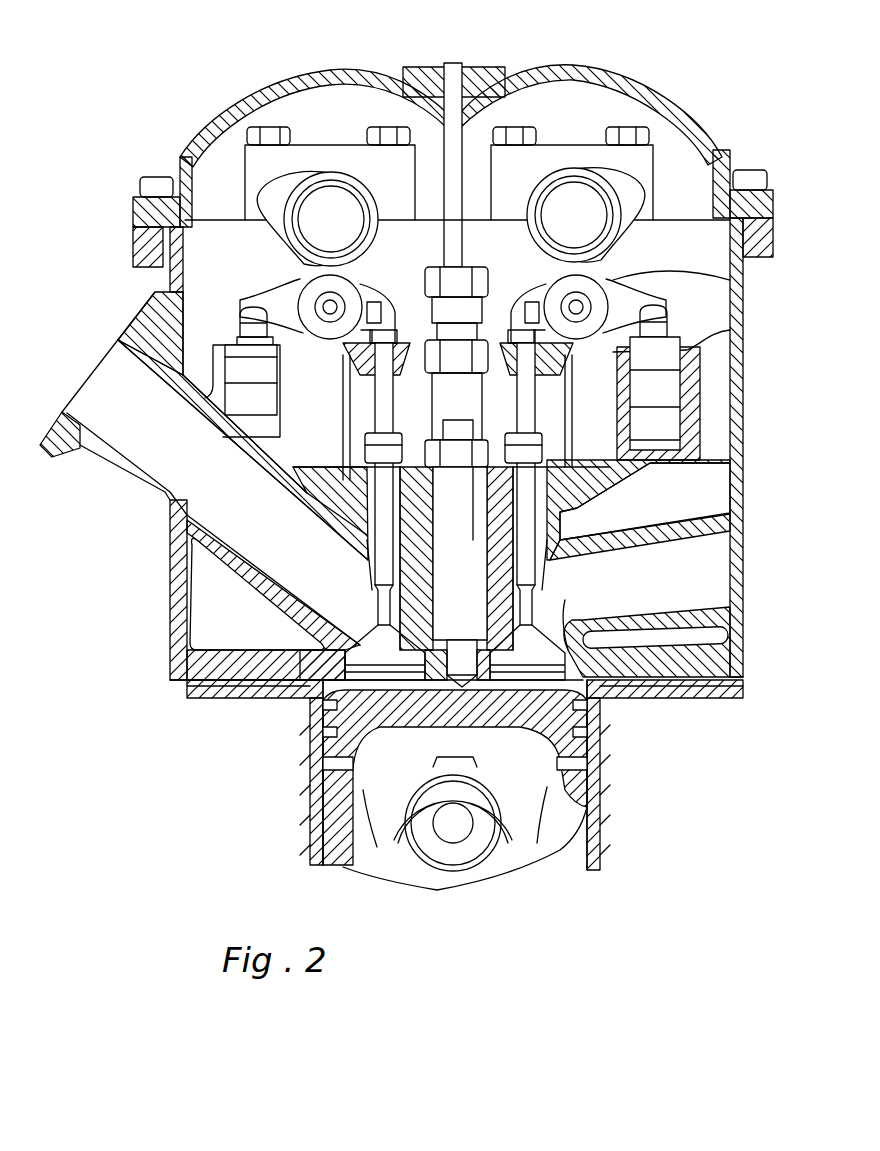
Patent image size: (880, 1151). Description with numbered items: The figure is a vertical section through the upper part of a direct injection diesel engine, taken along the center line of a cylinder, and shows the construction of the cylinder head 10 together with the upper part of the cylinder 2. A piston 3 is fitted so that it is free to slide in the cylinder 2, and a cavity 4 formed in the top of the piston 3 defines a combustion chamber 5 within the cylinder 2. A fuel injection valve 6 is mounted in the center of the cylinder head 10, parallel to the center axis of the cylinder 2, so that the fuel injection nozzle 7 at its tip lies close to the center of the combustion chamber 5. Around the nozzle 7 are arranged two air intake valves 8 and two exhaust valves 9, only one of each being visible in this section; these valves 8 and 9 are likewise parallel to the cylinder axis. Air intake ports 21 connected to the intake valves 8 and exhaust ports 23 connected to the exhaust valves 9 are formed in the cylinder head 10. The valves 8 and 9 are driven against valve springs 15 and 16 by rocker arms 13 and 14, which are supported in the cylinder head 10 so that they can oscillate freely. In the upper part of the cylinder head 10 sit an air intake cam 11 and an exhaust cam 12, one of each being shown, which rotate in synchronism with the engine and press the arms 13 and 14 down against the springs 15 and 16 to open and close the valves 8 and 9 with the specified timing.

The cylinder 2 is at (586, 851).
The piston 3 is at (590, 787).
The cavity 4 is at (600, 737).
The combustion chamber 5 is at (323, 702).
The fuel injection valve 6 is at (463, 603).
The fuel injection nozzle 7 is at (583, 686).
The air intake valve 8 is at (340, 681).
The exhaust valve 9 is at (637, 683).
The cylinder head 10 is at (178, 637).
The air intake cam 11 is at (290, 190).
The exhaust cam 12 is at (627, 180).
The rocker arm 13 is at (270, 300).
The rocker arm 14 is at (730, 278).
The valve spring 15 is at (247, 355).
The valve spring 16 is at (730, 324).
The air intake port 21 is at (217, 500).
The exhaust port 23 is at (723, 593).